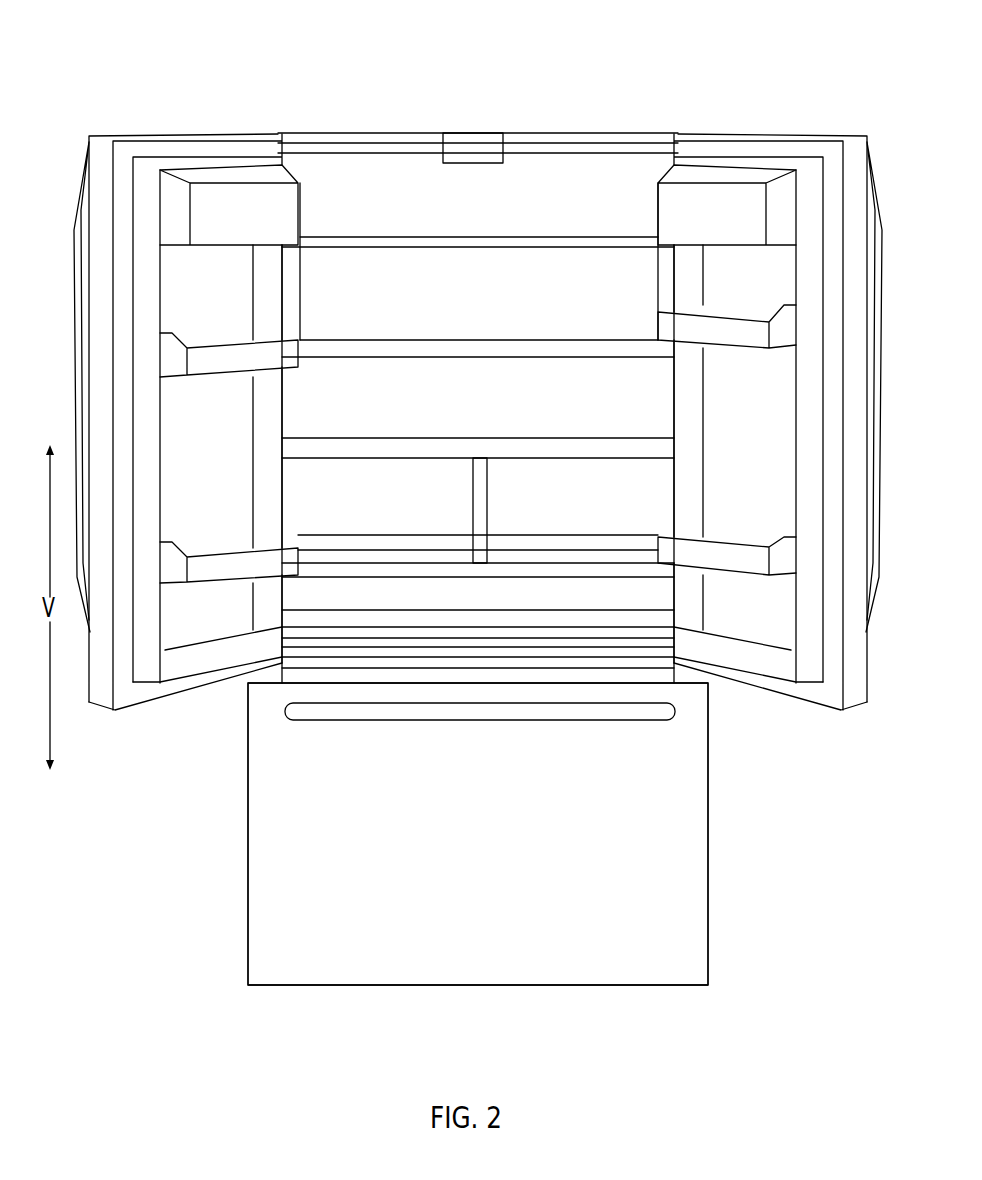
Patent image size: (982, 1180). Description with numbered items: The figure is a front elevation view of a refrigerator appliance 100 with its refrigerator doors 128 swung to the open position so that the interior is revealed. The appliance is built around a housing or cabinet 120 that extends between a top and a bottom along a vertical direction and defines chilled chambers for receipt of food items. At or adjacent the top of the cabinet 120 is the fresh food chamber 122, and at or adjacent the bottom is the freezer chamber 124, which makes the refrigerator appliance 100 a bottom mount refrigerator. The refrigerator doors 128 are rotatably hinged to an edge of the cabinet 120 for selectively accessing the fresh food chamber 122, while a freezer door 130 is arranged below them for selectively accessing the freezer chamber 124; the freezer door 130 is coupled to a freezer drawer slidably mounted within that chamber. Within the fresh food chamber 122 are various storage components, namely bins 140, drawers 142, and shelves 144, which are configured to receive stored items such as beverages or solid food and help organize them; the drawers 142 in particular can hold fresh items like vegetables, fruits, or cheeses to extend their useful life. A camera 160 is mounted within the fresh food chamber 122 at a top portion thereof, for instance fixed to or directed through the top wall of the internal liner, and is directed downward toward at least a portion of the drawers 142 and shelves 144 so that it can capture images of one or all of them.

The refrigerator appliance 100 is at (677, 64).
The cabinet 120 is at (708, 681).
The fresh food chamber 122 is at (597, 169).
The freezer chamber 124 is at (670, 886).
The refrigerator doors 128 is at (197, 147).
The freezer door 130 is at (280, 899).
The bins 140 is at (247, 563).
The drawers 142 is at (510, 557).
The shelves 144 is at (478, 243).
The camera 160 is at (477, 163).